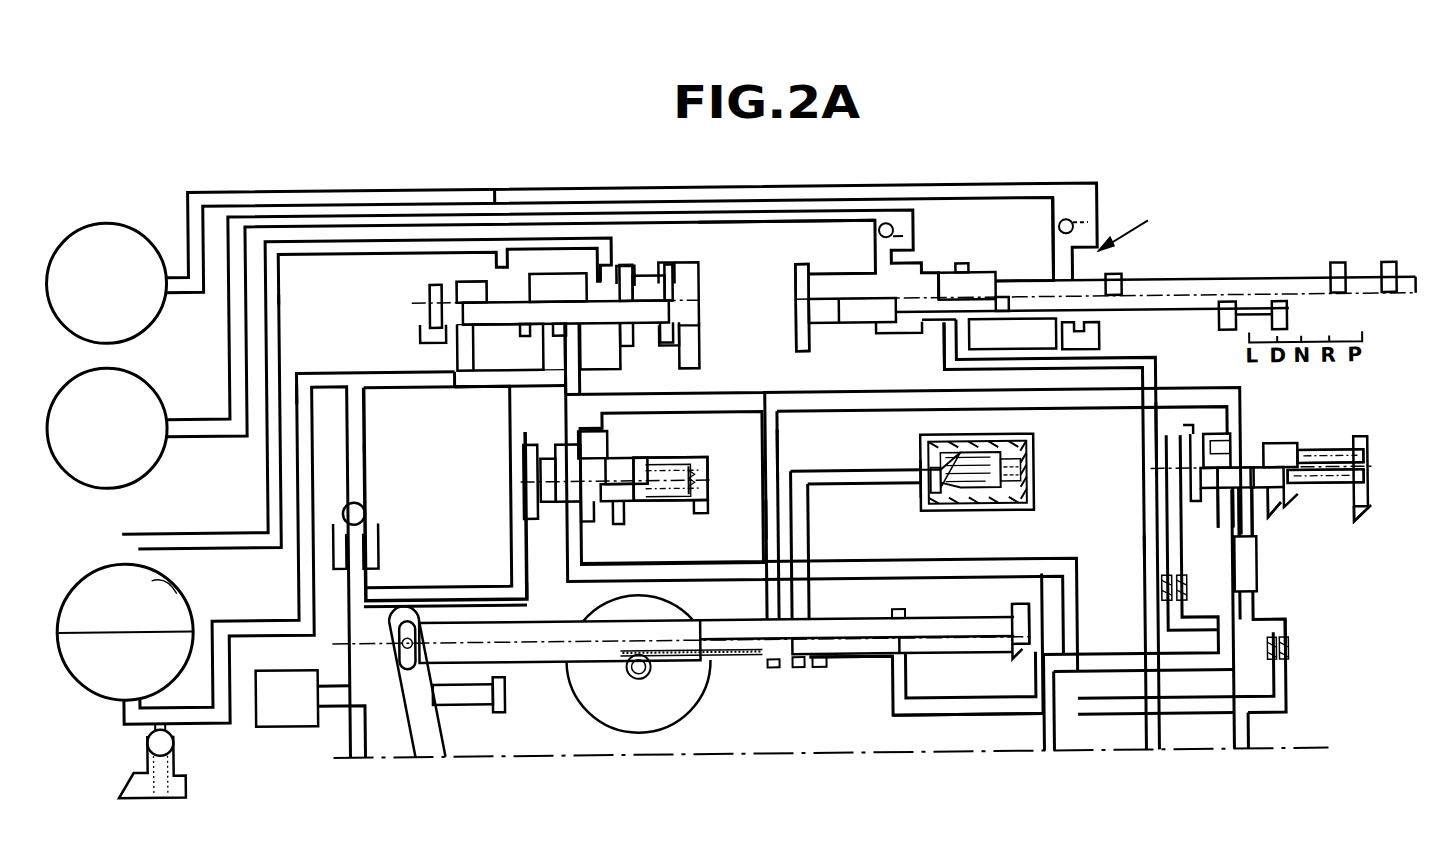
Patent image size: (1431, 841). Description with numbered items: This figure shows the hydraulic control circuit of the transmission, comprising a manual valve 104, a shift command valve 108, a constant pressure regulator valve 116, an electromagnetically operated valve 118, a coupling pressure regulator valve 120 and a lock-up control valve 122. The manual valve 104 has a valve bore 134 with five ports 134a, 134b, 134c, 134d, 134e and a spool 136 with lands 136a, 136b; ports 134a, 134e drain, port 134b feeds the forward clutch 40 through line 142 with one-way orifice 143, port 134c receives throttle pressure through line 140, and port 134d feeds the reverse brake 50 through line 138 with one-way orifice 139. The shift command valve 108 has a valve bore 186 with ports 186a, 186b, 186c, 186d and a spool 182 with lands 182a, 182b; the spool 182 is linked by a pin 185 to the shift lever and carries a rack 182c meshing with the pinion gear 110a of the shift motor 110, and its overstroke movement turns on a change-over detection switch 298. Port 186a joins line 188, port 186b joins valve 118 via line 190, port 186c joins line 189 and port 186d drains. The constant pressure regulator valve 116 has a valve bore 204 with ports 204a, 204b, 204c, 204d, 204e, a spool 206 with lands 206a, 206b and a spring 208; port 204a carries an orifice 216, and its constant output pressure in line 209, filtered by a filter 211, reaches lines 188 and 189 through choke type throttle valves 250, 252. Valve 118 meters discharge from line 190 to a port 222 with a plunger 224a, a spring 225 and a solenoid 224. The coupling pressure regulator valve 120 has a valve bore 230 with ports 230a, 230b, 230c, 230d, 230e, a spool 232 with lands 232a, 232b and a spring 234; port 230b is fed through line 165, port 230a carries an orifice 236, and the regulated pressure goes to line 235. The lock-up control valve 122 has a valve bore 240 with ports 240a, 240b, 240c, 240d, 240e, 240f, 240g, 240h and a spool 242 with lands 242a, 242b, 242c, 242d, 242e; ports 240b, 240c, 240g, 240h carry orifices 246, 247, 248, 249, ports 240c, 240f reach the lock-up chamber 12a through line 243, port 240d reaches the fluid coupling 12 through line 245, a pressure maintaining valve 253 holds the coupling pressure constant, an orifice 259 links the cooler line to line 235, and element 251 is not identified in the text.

The fluid coupling 12 is at (92, 688).
The lock-up chamber 12a is at (178, 590).
The forward clutch 40 is at (156, 380).
The reverse brake 50 is at (142, 236).
The manual valve 104 is at (1150, 225).
The shift command valve 108 is at (846, 660).
The shift motor 110 is at (572, 714).
The pinion gear 110a is at (642, 676).
The constant pressure regulator valve 116 is at (1305, 503).
The electromagnetically operated valve 118 is at (910, 460).
The coupling pressure regulator valve 120 is at (662, 500).
The lock-up control valve 122 is at (375, 300).
The valve bore 134 is at (1165, 280).
The port 134a is at (805, 340).
The port 134b is at (908, 332).
The port 134c is at (952, 360).
The port 134d is at (1062, 325).
The port 134e is at (1085, 330).
The spool 136 is at (1266, 284).
The land 136a is at (972, 280).
The land 136b is at (1115, 280).
The hydraulic fluid line 138 is at (1024, 239).
The one-way orifice 139 is at (1080, 228).
The hydraulic fluid line 140 is at (1141, 540).
The hydraulic fluid line 142 is at (758, 217).
The one-way orifice 143 is at (905, 236).
The hydraulic fluid line 165 is at (910, 590).
The spool 182 is at (530, 660).
The land 182a is at (768, 670).
The land 182b is at (938, 650).
The rack 182c is at (722, 662).
The pin 185 is at (410, 650).
The valve bore 186 is at (970, 622).
The port 186a is at (795, 672).
The port 186b is at (815, 672).
The port 186c is at (898, 662).
The port 186d is at (1015, 665).
The hydraulic fluid line 188 is at (780, 446).
The hydraulic fluid line 189 is at (922, 717).
The hydraulic fluid line 190 is at (768, 527).
The valve bore 204 is at (1335, 452).
The port 204a is at (1200, 490).
The port 204b is at (1224, 528).
The port 204c is at (1252, 540).
The port 204d is at (1275, 522).
The port 204e is at (1362, 512).
The spool 206 is at (1355, 460).
The land 206a is at (1215, 455).
The land 206b is at (1275, 462).
The spring 208 is at (1355, 486).
The hydraulic fluid line 209 is at (1118, 410).
The filter 211 is at (1256, 580).
The orifice 216 is at (1200, 455).
The port 222 is at (940, 500).
The solenoid 224 is at (1010, 447).
The plunger 224a is at (940, 460).
The spring 225 is at (1020, 475).
The valve bore 230 is at (700, 455).
The port 230a is at (600, 495).
The port 230b is at (590, 470).
The port 230c is at (588, 522).
The port 230d is at (628, 508).
The port 230e is at (697, 513).
The spool 232 is at (540, 494).
The land 232a is at (555, 474).
The land 232b is at (620, 475).
The spring 234 is at (707, 478).
The hydraulic fluid line 235 is at (572, 355).
The orifice 236 is at (530, 452).
The valve bore 240 is at (640, 270).
The port 240a is at (437, 325).
The port 240b is at (458, 333).
The port 240c is at (508, 347).
The port 240d is at (462, 370).
The port 240e is at (548, 360).
The port 240f is at (615, 320).
The port 240g is at (628, 352).
The port 240h is at (678, 345).
The spool 242 is at (440, 318).
The land 242a is at (434, 288).
The land 242b is at (492, 300).
The land 242c is at (554, 277).
The land 242d is at (600, 280).
The land 242e is at (680, 292).
The hydraulic fluid line 243 is at (282, 292).
The hydraulic fluid line 245 is at (365, 452).
The orifice 246 is at (470, 350).
The orifice 247 is at (507, 250).
The orifice 248 is at (612, 352).
The orifice 249 is at (685, 370).
The choke type throttle valve 250 is at (1158, 598).
The relief valve 251 is at (170, 737).
The choke type throttle valve 252 is at (1288, 658).
The pressure maintaining valve 253 is at (370, 508).
The orifice 259 is at (505, 597).
The change-over detection switch 298 is at (283, 666).